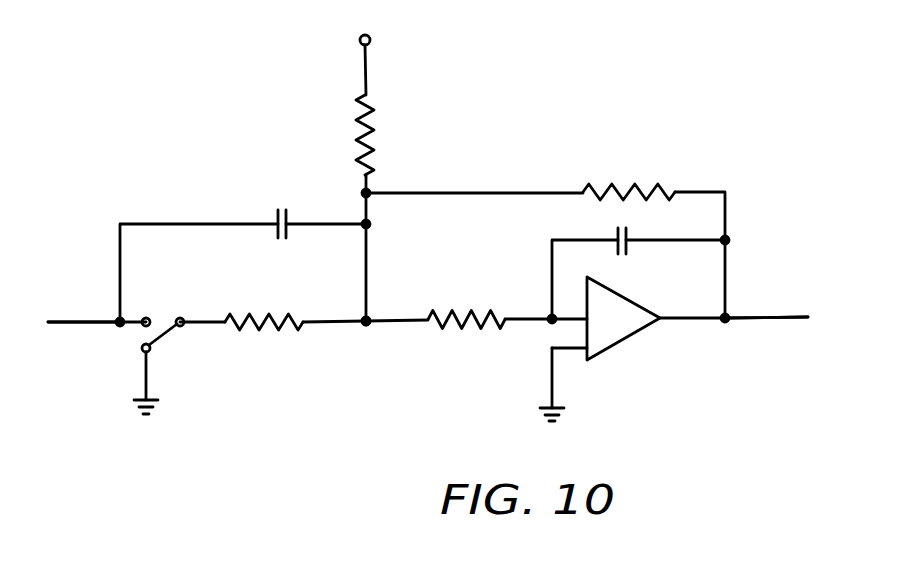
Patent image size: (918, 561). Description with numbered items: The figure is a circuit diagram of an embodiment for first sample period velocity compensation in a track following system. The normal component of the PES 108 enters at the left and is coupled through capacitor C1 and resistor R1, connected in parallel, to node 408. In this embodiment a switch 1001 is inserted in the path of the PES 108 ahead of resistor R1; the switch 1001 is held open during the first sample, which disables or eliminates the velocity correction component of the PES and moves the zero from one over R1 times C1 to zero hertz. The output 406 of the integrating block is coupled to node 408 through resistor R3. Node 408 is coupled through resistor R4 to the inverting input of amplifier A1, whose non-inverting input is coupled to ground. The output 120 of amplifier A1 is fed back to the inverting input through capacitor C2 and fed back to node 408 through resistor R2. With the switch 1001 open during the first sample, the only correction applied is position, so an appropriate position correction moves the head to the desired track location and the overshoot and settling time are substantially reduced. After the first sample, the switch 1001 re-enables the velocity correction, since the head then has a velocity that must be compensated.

The normal component of PES 108 is at (78, 320).
The switch 1001 is at (158, 317).
The resistor R1 is at (273, 330).
The capacitor C1 is at (299, 188).
The output of the integrating block 406 is at (367, 62).
The resistor R3 is at (372, 119).
The resistor R2 is at (630, 183).
The capacitor C2 is at (618, 227).
The resistor R4 is at (483, 293).
The node 408 is at (366, 326).
The amplifier A1 is at (623, 330).
The output 120 is at (767, 317).